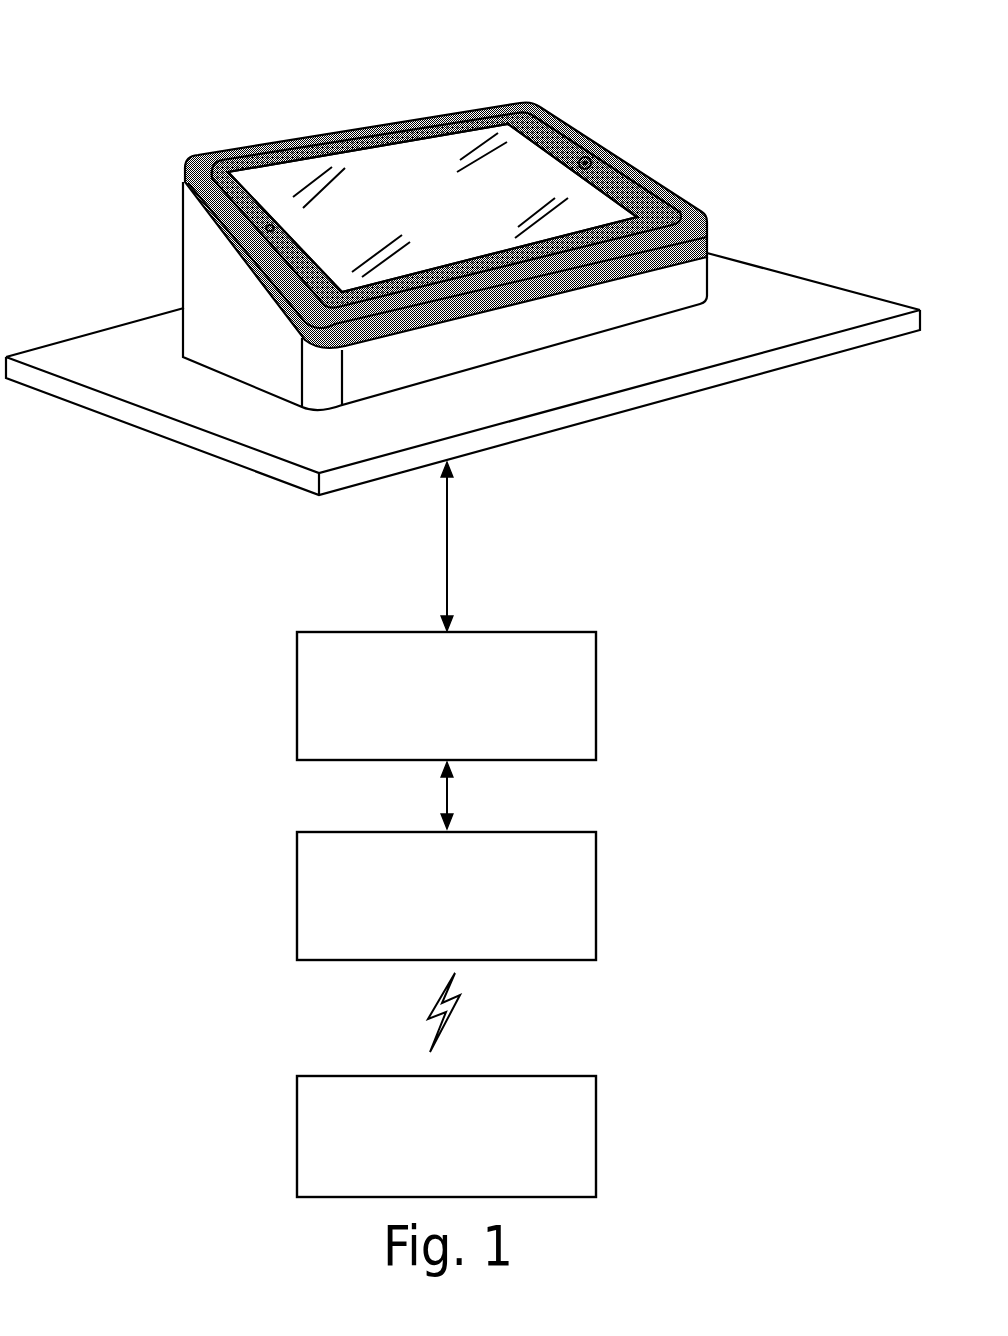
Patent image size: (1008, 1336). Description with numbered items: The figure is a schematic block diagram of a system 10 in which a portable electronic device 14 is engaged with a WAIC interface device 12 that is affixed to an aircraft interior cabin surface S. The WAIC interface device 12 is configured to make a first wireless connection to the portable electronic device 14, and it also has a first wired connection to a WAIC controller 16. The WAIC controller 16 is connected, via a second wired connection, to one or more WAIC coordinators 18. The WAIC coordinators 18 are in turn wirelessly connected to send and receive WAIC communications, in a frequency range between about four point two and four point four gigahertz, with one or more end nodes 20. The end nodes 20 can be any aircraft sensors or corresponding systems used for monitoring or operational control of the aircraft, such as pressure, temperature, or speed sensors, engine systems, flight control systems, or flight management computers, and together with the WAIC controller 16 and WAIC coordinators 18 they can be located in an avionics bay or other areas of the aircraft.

The system 10 is at (156, 75).
The WAIC interface device 12 is at (687, 247).
The portable electronic device 14 is at (630, 190).
The aircraft interior cabin surface S is at (253, 432).
The WAIC controller 16 is at (446, 696).
The WAIC coordinators 18 is at (446, 896).
The end nodes 20 is at (446, 1136).